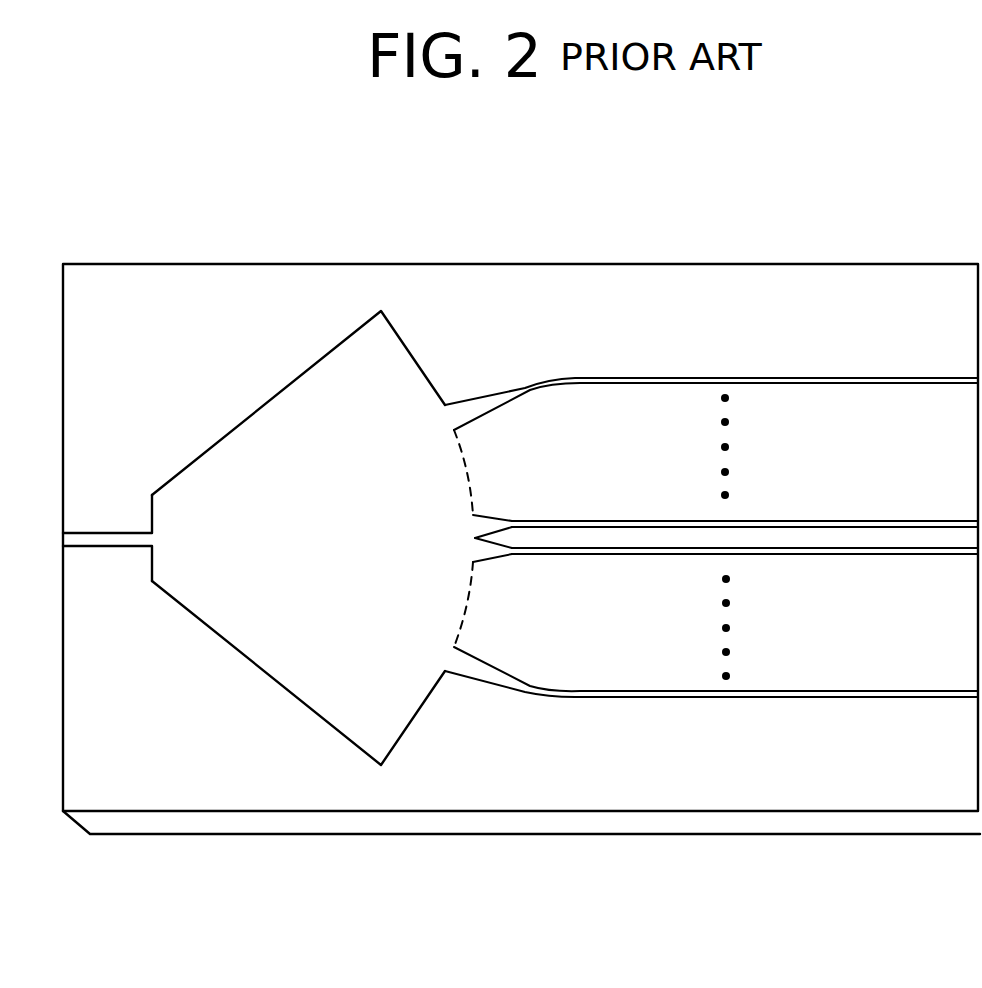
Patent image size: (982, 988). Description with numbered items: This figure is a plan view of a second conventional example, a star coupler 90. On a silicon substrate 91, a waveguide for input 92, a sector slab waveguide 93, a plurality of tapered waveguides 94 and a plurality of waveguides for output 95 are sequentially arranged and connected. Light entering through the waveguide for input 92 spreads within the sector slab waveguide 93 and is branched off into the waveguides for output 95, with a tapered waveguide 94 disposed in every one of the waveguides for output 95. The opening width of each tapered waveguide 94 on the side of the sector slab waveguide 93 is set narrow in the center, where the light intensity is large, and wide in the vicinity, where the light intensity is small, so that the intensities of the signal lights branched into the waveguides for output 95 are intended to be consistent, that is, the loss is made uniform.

The star coupler 90 is at (861, 224).
The silicon substrate 91 is at (925, 823).
The waveguide for input 92 is at (123, 535).
The sector slab waveguide 93 is at (342, 363).
The tapered waveguides 94 is at (483, 400).
The waveguides for output 95 is at (807, 378).